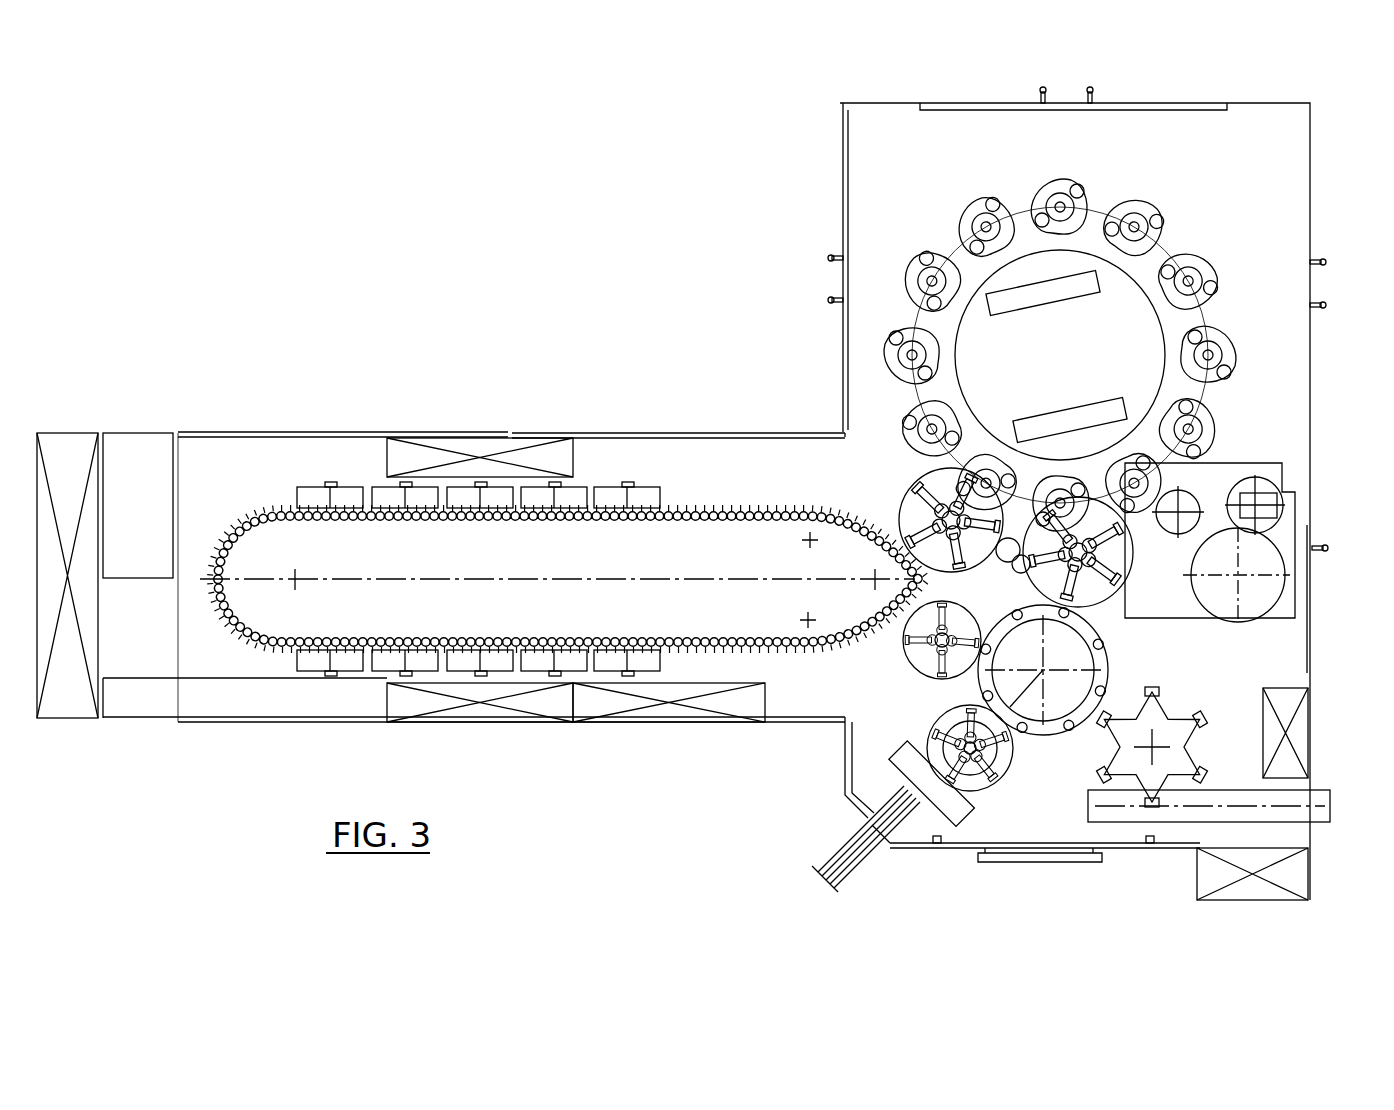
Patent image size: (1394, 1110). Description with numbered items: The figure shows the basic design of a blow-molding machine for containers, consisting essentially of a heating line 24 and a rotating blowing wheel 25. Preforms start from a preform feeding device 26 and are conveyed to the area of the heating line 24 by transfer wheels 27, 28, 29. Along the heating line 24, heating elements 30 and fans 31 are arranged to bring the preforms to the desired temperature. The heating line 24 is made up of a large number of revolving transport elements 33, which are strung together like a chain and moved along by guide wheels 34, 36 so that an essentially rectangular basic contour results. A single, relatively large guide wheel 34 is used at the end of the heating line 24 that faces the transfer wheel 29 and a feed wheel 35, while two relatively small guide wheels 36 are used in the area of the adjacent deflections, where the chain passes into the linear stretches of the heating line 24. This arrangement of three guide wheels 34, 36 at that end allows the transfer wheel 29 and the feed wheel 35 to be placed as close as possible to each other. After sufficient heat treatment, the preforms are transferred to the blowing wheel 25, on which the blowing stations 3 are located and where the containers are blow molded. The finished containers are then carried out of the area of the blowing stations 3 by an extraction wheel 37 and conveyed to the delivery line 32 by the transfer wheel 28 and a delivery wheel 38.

The blowing station 3 is at (897, 333).
The heating line 24 is at (615, 467).
The blowing wheel 25 is at (990, 273).
The preform feeding device 26 is at (878, 845).
The transfer wheel 27 is at (983, 788).
The transfer wheel 28 is at (1042, 737).
The transfer wheel 29 is at (935, 673).
The heating element 30 is at (348, 492).
The fan 31 is at (472, 447).
The delivery line 32 is at (1322, 822).
The transport element 33 is at (264, 640).
The guide wheel 34 is at (295, 583).
The feed wheel 35 is at (915, 468).
The guide wheel 36 is at (808, 540).
The extraction wheel 37 is at (1133, 572).
The delivery wheel 38 is at (1163, 760).